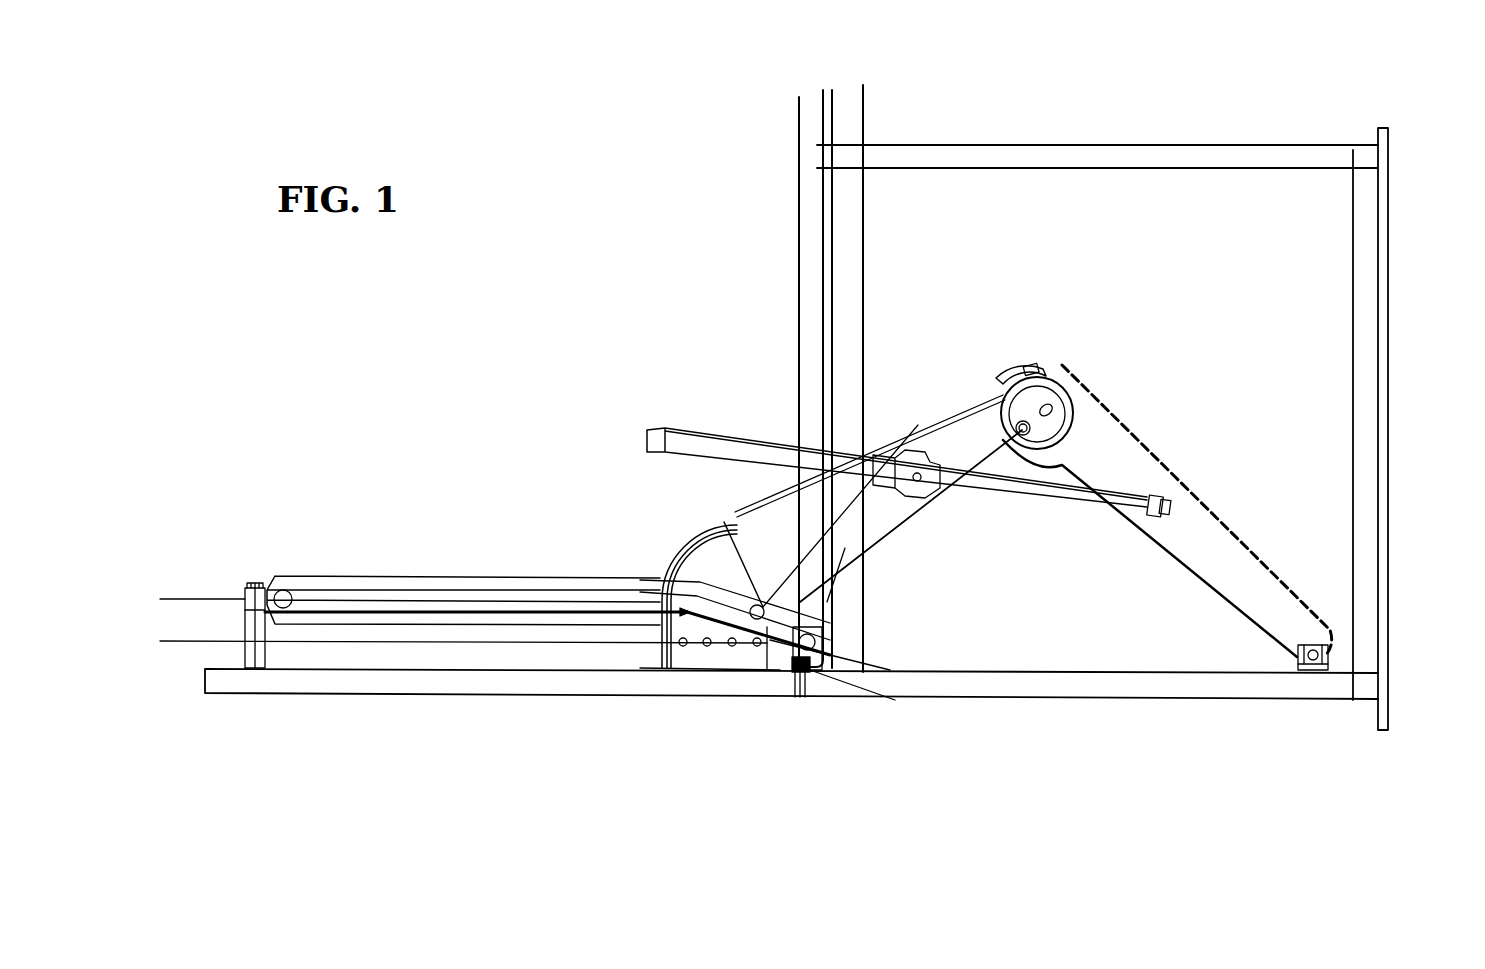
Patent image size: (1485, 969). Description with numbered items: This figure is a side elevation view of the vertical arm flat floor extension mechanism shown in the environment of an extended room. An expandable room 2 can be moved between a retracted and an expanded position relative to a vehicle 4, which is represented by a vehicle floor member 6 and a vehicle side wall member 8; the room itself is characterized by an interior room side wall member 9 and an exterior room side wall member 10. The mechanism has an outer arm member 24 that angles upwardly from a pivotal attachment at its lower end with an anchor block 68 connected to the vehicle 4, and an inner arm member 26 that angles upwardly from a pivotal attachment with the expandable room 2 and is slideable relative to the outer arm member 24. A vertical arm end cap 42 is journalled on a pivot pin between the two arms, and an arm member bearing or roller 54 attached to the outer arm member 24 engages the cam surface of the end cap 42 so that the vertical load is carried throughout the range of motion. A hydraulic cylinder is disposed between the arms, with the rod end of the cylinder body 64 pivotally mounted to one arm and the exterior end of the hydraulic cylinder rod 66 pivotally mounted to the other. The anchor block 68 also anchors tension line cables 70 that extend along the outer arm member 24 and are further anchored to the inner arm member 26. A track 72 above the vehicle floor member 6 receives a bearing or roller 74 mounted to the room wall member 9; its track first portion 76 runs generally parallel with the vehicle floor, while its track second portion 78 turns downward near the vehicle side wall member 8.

The expandable room 2 is at (1007, 205).
The vehicle 4 is at (650, 325).
The vehicle floor member 6 is at (443, 690).
The vehicle side wall member 8 is at (845, 215).
The interior room side wall member 9 is at (805, 270).
The exterior room side wall member 10 is at (1363, 381).
The outer arm member 24 is at (918, 505).
The inner arm member 26 is at (1230, 570).
The vertical arm end cap 42 is at (1010, 353).
The arm member bearing or roller 54 is at (926, 378).
The cylinder body 64 is at (680, 457).
The hydraulic cylinder rod 66 is at (1063, 498).
The anchor block 68 is at (703, 657).
The tension line cables 70 is at (736, 524).
The track 72 is at (505, 562).
The bearing or roller 74 is at (807, 697).
The track first portion 76 is at (430, 597).
The track second portion 78 is at (723, 607).